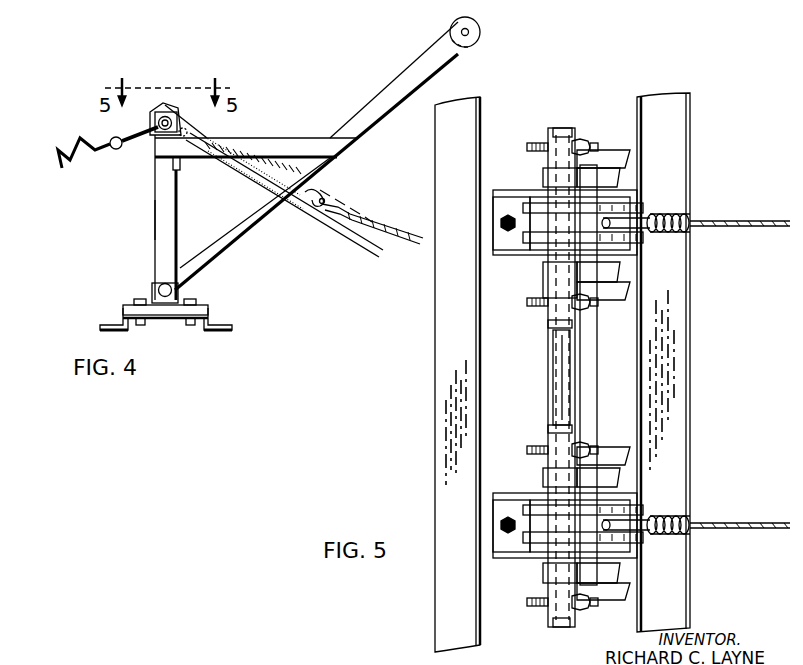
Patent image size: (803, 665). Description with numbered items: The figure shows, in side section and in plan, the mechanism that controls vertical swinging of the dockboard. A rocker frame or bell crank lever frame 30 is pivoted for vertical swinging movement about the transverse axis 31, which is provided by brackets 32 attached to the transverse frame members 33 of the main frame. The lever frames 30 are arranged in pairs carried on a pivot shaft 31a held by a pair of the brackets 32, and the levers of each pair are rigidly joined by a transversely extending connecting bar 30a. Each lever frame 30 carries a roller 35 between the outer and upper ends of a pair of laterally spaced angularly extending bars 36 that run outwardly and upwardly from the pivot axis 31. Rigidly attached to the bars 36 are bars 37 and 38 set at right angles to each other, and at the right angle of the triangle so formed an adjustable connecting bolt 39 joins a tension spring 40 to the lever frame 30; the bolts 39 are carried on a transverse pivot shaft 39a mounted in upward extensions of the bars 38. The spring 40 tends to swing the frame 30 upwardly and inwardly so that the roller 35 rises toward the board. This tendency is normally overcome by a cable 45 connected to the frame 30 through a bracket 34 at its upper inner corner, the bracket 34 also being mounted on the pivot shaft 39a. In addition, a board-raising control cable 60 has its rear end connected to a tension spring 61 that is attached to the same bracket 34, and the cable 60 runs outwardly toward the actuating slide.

In FIG. 4, the rocker frame 30 is at (154, 218).
In FIG. 4, the connecting bar 30a is at (240, 207).
In FIG. 4, the transverse axis 31 is at (158, 289).
In FIG. 5, the pivot shaft 31a is at (548, 353).
In FIG. 4, the bracket 32 is at (201, 305).
In FIG. 5, the bracket 32 is at (510, 246).
In FIG. 4, the transverse frame member 33 is at (214, 325).
In FIG. 5, the transverse frame member 33 is at (687, 288).
In FIG. 4, the bracket 34 is at (164, 104).
In FIG. 5, the bracket 34 is at (525, 206).
In FIG. 4, the roller 35 is at (465, 20).
In FIG. 4, the angularly extending bar 36 is at (403, 92).
In FIG. 5, the angularly extending bar 36 is at (623, 178).
In FIG. 4, the bar 37 is at (268, 141).
In FIG. 5, the bar 37 is at (605, 150).
In FIG. 4, the bar 38 is at (160, 184).
In FIG. 5, the bar 38 is at (545, 178).
In FIG. 4, the adjustable connecting bolt 39 is at (140, 145).
In FIG. 5, the adjustable connecting bolt 39 is at (533, 143).
In FIG. 4, the transverse pivot shaft 39a is at (169, 118).
In FIG. 5, the transverse pivot shaft 39a is at (575, 325).
In FIG. 4, the spring 40 is at (66, 156).
In FIG. 4, the cable 45 is at (347, 238).
In FIG. 5, the cable 45 is at (749, 220).
In FIG. 4, the board-raising control cable 60 is at (386, 226).
In FIG. 4, the tension spring 61 is at (324, 200).
In FIG. 5, the tension spring 61 is at (690, 216).